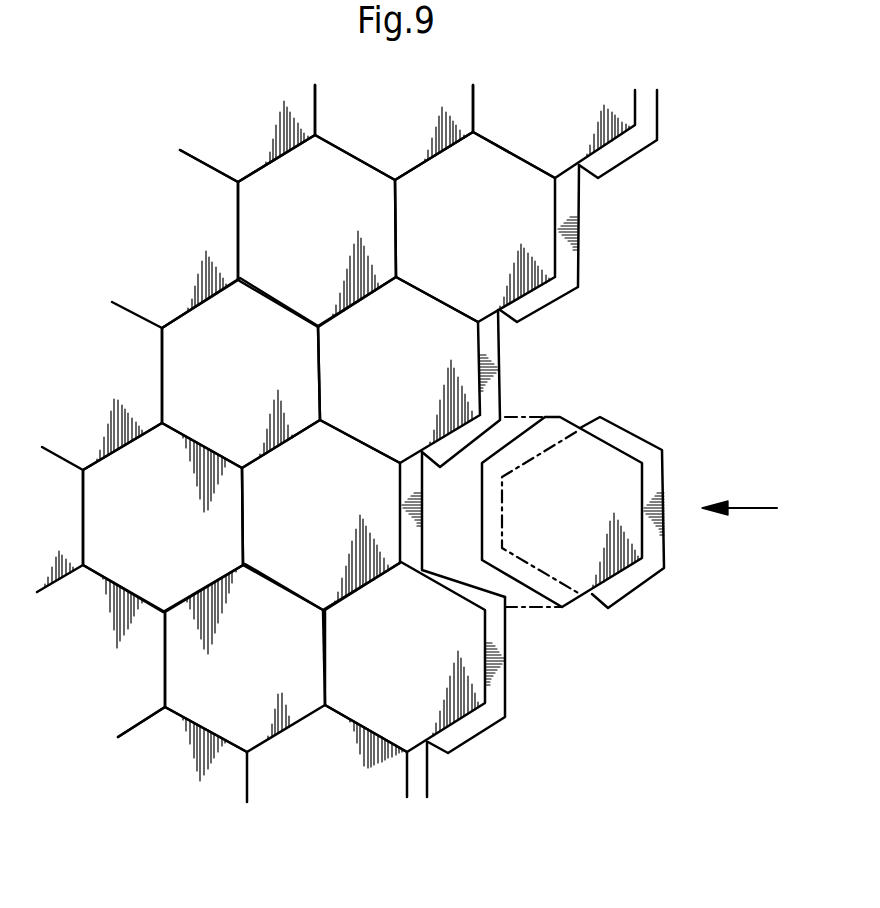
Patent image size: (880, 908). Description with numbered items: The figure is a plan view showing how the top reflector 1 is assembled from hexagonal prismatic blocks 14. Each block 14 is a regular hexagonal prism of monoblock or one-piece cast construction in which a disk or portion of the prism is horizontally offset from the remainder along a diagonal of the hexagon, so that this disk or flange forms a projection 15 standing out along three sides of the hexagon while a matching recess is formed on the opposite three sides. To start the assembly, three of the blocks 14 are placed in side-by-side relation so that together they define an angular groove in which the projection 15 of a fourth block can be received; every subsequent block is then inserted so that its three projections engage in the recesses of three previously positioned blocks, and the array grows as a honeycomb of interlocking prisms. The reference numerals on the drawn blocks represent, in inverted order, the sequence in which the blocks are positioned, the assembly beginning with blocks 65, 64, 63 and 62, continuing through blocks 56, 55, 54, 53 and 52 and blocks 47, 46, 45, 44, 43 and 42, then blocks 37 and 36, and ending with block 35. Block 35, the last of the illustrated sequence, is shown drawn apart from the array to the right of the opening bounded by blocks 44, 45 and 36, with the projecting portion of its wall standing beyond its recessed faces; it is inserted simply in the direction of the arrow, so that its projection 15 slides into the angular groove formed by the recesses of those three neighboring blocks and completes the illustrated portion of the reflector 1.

The honeycomb panel 1 is at (611, 233).
The block 14 is at (606, 432).
The projection 15 is at (647, 450).
The block 35 is at (603, 488).
The block 36 is at (391, 676).
The block 37 is at (315, 795).
The block 42 is at (544, 132).
The block 43 is at (465, 253).
The block 44 is at (384, 386).
The block 45 is at (307, 530).
The block 46 is at (232, 681).
The block 47 is at (153, 798).
The block 52 is at (385, 135).
The block 53 is at (307, 255).
The block 54 is at (226, 386).
The block 55 is at (152, 530).
The block 56 is at (76, 681).
The block 62 is at (232, 135).
The block 63 is at (155, 255).
The block 64 is at (89, 386).
The cell 65 is at (35, 531).